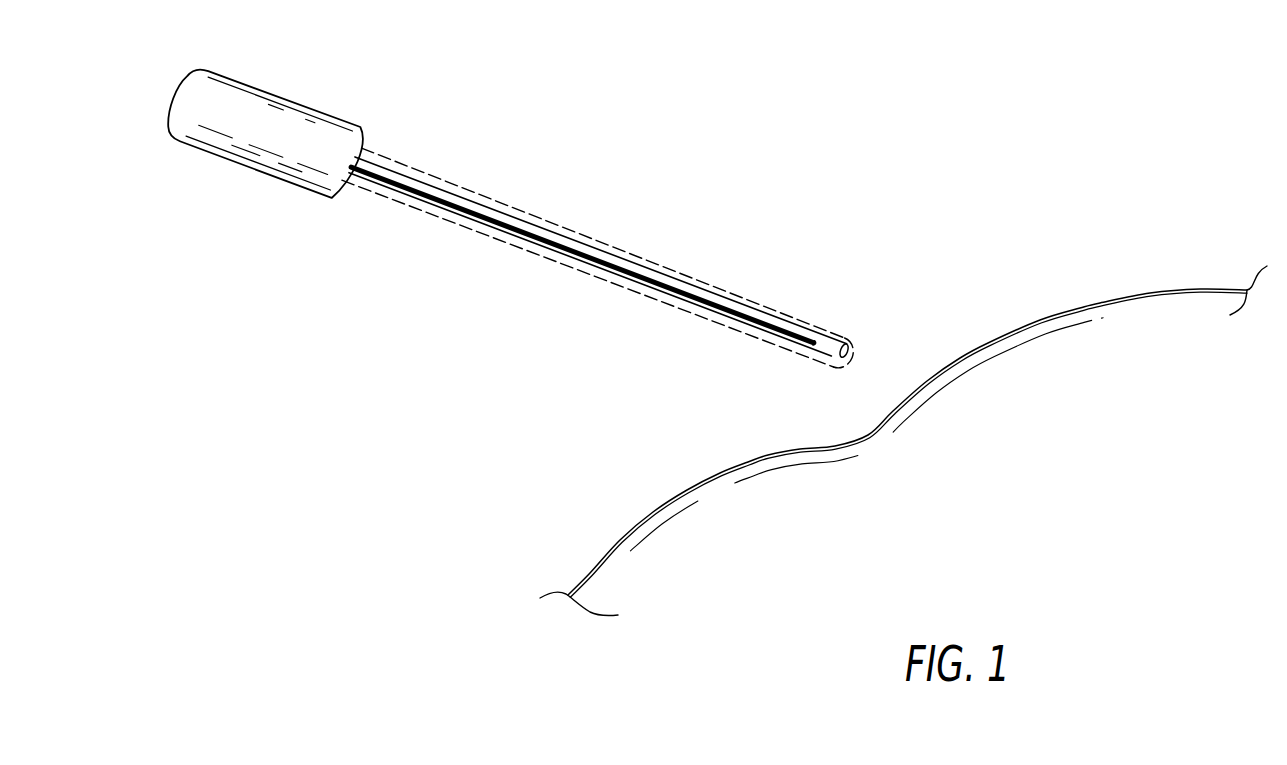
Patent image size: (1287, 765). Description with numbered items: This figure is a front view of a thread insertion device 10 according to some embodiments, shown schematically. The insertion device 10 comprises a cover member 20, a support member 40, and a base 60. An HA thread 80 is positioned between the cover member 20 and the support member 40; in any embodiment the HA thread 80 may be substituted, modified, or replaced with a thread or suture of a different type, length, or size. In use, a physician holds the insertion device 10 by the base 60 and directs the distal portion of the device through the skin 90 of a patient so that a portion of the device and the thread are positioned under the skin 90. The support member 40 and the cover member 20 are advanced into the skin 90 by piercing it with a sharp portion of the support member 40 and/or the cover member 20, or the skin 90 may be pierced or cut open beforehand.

The thread insertion device 10 is at (510, 203).
The cover member 20 is at (665, 264).
The support member 40 is at (469, 203).
The base 60 is at (255, 103).
The HA thread 80 is at (592, 266).
The skin 90 is at (963, 464).